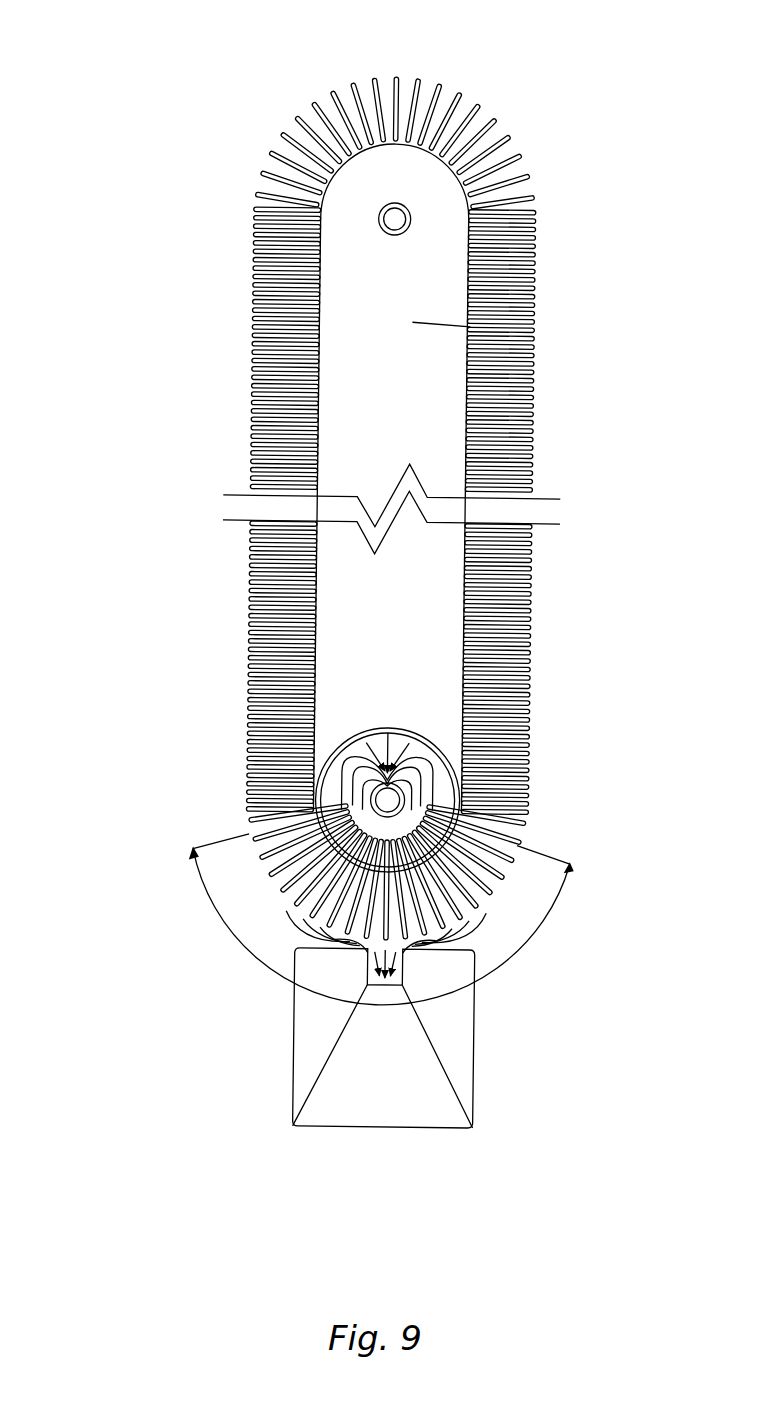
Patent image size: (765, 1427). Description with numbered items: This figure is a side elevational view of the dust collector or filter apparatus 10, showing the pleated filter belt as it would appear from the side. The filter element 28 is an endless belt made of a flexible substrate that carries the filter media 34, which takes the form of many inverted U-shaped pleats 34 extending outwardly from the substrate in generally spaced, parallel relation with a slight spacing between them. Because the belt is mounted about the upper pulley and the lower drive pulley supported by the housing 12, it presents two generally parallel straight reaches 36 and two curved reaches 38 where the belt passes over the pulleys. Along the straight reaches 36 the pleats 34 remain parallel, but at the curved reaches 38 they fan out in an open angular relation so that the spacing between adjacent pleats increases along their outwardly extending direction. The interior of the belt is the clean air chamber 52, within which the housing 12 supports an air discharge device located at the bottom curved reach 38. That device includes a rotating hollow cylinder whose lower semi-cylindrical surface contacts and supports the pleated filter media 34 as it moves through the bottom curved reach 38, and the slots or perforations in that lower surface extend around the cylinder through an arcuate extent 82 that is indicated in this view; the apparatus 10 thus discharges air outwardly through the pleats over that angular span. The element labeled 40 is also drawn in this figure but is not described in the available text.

The dust collector or filter apparatus 10 is at (592, 568).
The housing 12 is at (456, 643).
The filter element 28 is at (533, 381).
The filter media (inverted U-shaped pleats) 34 is at (505, 166).
The straight reaches 36 is at (180, 421).
The curved reaches 38 is at (403, 72).
The vacuum housing 40 is at (457, 1076).
The clean air chamber 52 is at (470, 324).
The arcuate extent 82 is at (506, 952).